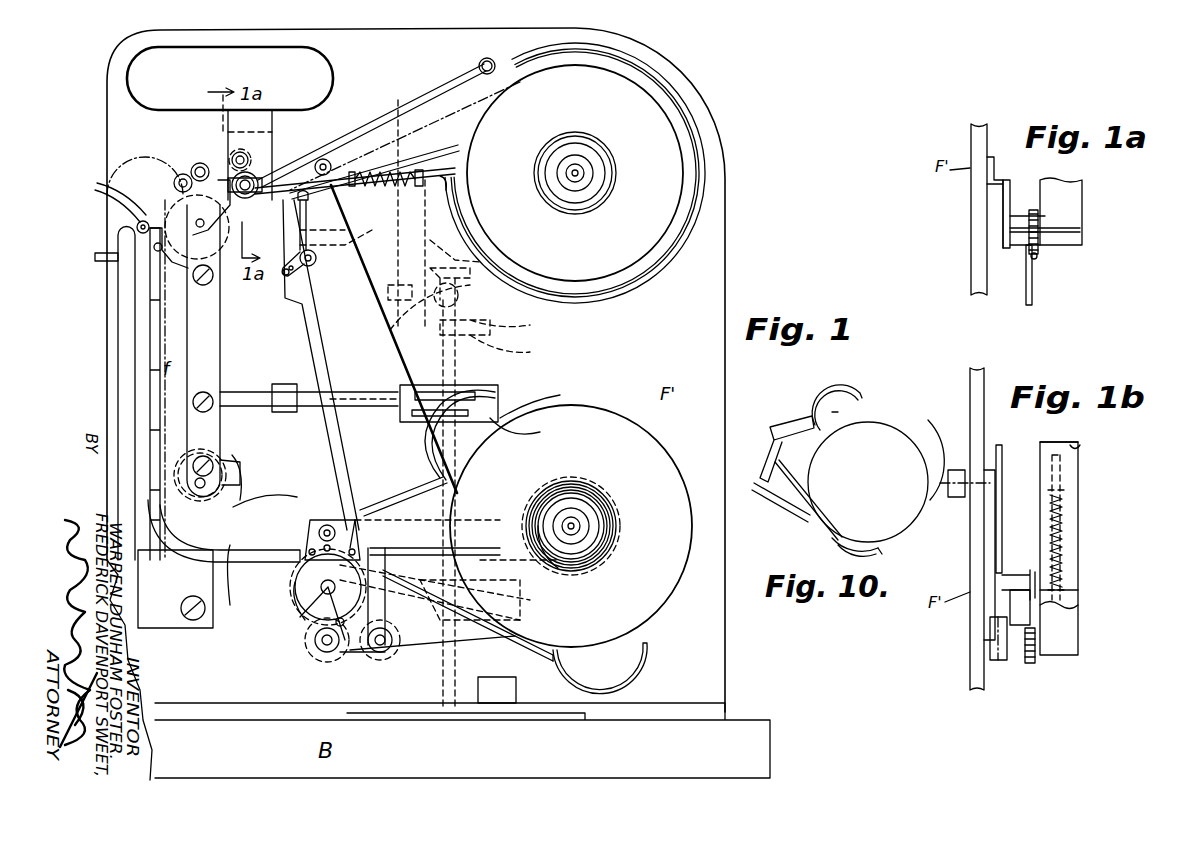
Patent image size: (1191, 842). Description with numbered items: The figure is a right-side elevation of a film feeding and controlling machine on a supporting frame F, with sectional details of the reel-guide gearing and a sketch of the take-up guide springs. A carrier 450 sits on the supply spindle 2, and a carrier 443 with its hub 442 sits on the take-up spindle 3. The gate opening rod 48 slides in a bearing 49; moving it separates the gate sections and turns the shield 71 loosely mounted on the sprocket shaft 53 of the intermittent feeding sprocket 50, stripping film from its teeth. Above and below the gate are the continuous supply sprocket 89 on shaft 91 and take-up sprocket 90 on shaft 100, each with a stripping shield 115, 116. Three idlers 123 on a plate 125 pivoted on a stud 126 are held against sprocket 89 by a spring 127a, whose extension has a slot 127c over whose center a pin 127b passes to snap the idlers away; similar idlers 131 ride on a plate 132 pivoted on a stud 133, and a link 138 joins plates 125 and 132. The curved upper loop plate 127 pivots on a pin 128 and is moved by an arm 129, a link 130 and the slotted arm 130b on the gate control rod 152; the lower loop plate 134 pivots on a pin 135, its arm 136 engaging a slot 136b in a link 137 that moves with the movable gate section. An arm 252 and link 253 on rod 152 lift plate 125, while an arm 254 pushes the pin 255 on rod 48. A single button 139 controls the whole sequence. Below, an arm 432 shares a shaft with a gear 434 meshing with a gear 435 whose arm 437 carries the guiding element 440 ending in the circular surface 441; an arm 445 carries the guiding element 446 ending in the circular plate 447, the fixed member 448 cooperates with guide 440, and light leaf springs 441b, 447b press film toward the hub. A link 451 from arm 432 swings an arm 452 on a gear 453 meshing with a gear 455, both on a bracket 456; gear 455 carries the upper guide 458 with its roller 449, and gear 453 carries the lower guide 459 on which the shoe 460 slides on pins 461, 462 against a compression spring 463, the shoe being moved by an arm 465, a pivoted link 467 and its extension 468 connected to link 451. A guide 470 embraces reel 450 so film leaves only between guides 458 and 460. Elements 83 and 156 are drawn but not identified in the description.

In FIG. 1, the carrier receiving spindle 2 is at (584, 173).
In FIG. 1, the take-up spindle 3 is at (578, 519).
In FIG. 1, the gate opening rod 48 is at (480, 401).
In FIG. 1, the bearing 49 is at (280, 414).
In FIG. 1, the feeding sprocket 50 is at (244, 466).
In FIG. 1, the sprocket shaft 53 is at (238, 458).
In FIG. 1, the stripping and guiding and protecting shield 71 is at (270, 470).
In FIG. 1, the lever 83 is at (208, 462).
In FIG. 1, the supply sprocket 89 is at (168, 208).
In FIG. 1, the take-up sprocket 90 is at (295, 587).
In FIG. 1, the sprocket shaft 91 is at (198, 232).
In FIG. 1, the sprocket shaft 100 is at (328, 590).
In FIG. 1, the stripping and protective shield 115 is at (190, 180).
In FIG. 1, the stripping and protective shield 116 is at (292, 613).
In FIG. 1, the rollers or idlers 123 is at (178, 176).
In FIG. 1, the plate 125 is at (215, 170).
In FIG. 1B, the plate 125 is at (990, 522).
In FIG. 1, the stud 126 is at (415, 108).
In FIG. 1B, the stud 126 is at (956, 470).
In FIG. 1, the curved plate 127 is at (95, 187).
In FIG. 1, the spring 127a is at (475, 300).
In FIG. 1, the pin 127b is at (390, 325).
In FIG. 1, the slot 127c is at (485, 236).
In FIG. 1, the pin 128 is at (137, 222).
In FIG. 1, the arm 129 is at (150, 240).
In FIG. 1, the link 130 is at (343, 228).
In FIG. 1, the arm 130b is at (443, 215).
In FIG. 1, the rollers or idlers 131 is at (332, 533).
In FIG. 1, the plate 132 is at (405, 518).
In FIG. 1, the stud 133 is at (525, 566).
In FIG. 1, the curved plate 134 is at (340, 500).
In FIG. 1, the pin 135 is at (258, 484).
In FIG. 1, the arm 136 is at (250, 512).
In FIG. 1, the elongated slot 136b is at (242, 620).
In FIG. 1, the link 137 is at (230, 565).
In FIG. 1, the link 138 is at (400, 353).
In FIG. 1B, the link 138 is at (1002, 507).
In FIG. 1, the control knob or button 139 is at (520, 690).
In FIG. 1, the gate control rod 152 is at (457, 354).
In FIG. 1B, the pin 156 is at (993, 655).
In FIG. 1, the arm 252 is at (516, 347).
In FIG. 1, the link 253 is at (504, 324).
In FIG. 1, the arm 254 is at (547, 398).
In FIG. 1, the pin 255 is at (525, 430).
In FIG. 1, the arm 432 is at (335, 660).
In FIG. 1, the gear 434 is at (310, 655).
In FIG. 1, the gear 435 is at (380, 662).
In FIG. 1, the upwardly extending arm 437 is at (445, 570).
In FIG. 1, the guiding element 440 is at (395, 478).
In FIG. 10, the guiding element 440 is at (786, 420).
In FIG. 1, the circular surface 441 is at (470, 385).
In FIG. 10, the circular surface 441 is at (845, 390).
In FIG. 10, the leaf spring 441b is at (832, 410).
In FIG. 1, the hub 442 is at (618, 511).
In FIG. 1, the carrier 443 is at (660, 580).
In FIG. 10, the carrier 443 is at (906, 447).
In FIG. 1B, the carrier 443 is at (942, 458).
In FIG. 1, the arm 445 is at (468, 640).
In FIG. 10, the arm 445 is at (778, 510).
In FIG. 1, the guiding element 446 is at (520, 645).
In FIG. 1, the circular plate 447 is at (612, 548).
In FIG. 10, the circular plate 447 is at (872, 560).
In FIG. 10, the leaf spring 447b is at (875, 540).
In FIG. 1, the guiding member 448 is at (440, 540).
In FIG. 1, the guide roller 449 is at (490, 58).
In FIG. 1, the carrier 450 is at (690, 118).
In FIG. 1, the link 451 is at (330, 433).
In FIG. 1A, the link 451 is at (1034, 295).
In FIG. 1B, the link 451 is at (1010, 595).
In FIG. 1B, the arm 452 is at (990, 630).
In FIG. 1, the gear 453 is at (345, 205).
In FIG. 1A, the gear 453 is at (1038, 260).
In FIG. 1B, the gear 453 is at (1040, 632).
In FIG. 1, the gear 455 is at (255, 178).
In FIG. 1A, the gear 455 is at (1034, 208).
In FIG. 1B, the gear 455 is at (1040, 660).
In FIG. 1, the bracket 456 is at (252, 156).
In FIG. 1A, the bracket 456 is at (1006, 250).
In FIG. 1, the upper guide 458 is at (460, 84).
In FIG. 1A, the upper guide 458 is at (1084, 200).
In FIG. 1B, the upper guide 458 is at (1070, 614).
In FIG. 1, the main lower guide 459 is at (330, 158).
In FIG. 1A, the main lower guide 459 is at (1084, 238).
In FIG. 1B, the main lower guide 459 is at (1080, 532).
In FIG. 1B, the guide shoe 460 is at (1080, 448).
In FIG. 1, the pin 461 is at (456, 146).
In FIG. 1B, the pin 461 is at (1065, 480).
In FIG. 1, the pin 462 is at (395, 170).
In FIG. 1B, the pin 462 is at (1068, 550).
In FIG. 1, the compression spring 463 is at (452, 186).
In FIG. 1B, the compression spring 463 is at (1068, 505).
In FIG. 1, the arm 465 is at (340, 182).
In FIG. 1, the pivotally mounted link 467 is at (314, 263).
In FIG. 1B, the pivotally mounted link 467 is at (1018, 576).
In FIG. 1, the lower right angled extension 468 is at (306, 281).
In FIG. 1, the guide 470 is at (655, 78).